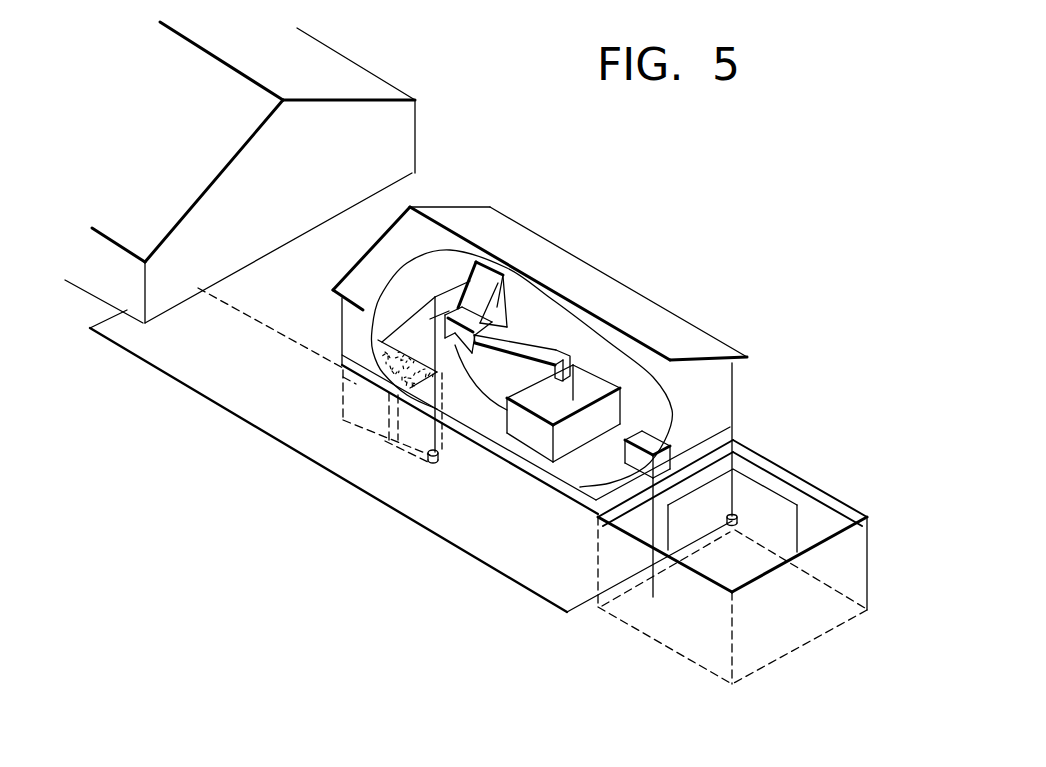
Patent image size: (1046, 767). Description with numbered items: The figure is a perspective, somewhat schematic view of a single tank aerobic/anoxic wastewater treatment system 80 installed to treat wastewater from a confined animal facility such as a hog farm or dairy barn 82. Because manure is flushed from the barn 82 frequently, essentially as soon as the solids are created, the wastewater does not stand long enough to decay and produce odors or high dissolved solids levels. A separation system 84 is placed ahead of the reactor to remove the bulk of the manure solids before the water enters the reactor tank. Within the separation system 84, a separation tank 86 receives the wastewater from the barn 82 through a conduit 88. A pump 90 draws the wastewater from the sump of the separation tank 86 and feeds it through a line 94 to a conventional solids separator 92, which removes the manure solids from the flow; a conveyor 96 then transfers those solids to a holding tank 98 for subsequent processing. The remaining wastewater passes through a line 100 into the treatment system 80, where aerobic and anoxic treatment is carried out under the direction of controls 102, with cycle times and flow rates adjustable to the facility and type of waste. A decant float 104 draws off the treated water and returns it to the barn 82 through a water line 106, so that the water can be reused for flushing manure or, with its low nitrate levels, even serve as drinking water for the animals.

The wastewater treatment system 80 is at (825, 490).
The barn 82 is at (369, 68).
The separation system 84 is at (392, 505).
The separation tank 86 is at (343, 402).
The conduit 88 is at (268, 333).
The pump 90 is at (439, 458).
The solids separator 92 is at (507, 282).
The line 94 is at (452, 292).
The conveyor 96 is at (548, 348).
The holding tank 98 is at (597, 380).
The line 100 is at (583, 480).
The controls 102 is at (658, 432).
The decant float 104 is at (740, 517).
The water line 106 is at (270, 436).